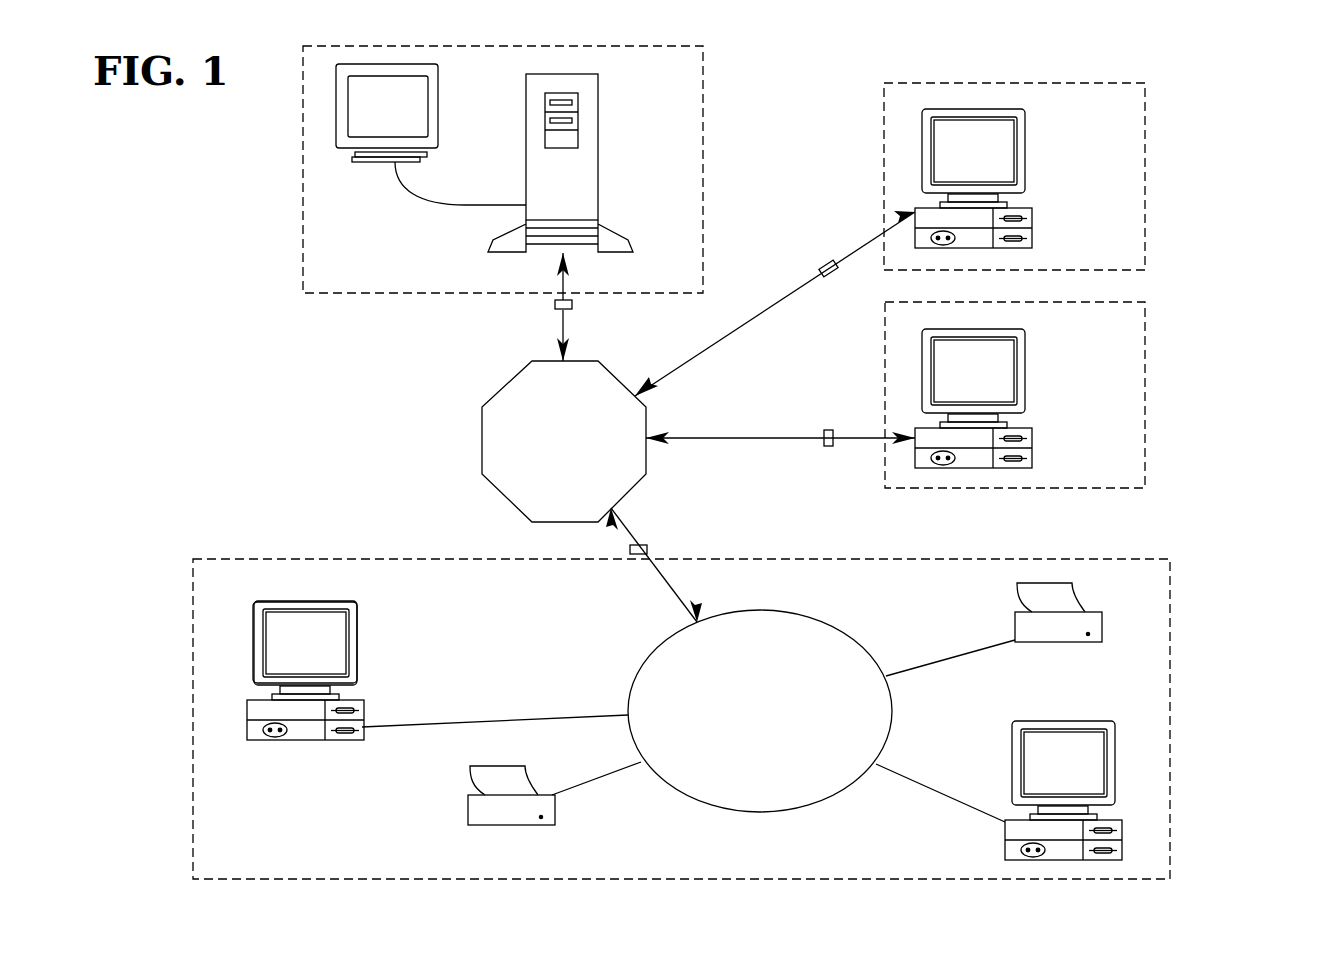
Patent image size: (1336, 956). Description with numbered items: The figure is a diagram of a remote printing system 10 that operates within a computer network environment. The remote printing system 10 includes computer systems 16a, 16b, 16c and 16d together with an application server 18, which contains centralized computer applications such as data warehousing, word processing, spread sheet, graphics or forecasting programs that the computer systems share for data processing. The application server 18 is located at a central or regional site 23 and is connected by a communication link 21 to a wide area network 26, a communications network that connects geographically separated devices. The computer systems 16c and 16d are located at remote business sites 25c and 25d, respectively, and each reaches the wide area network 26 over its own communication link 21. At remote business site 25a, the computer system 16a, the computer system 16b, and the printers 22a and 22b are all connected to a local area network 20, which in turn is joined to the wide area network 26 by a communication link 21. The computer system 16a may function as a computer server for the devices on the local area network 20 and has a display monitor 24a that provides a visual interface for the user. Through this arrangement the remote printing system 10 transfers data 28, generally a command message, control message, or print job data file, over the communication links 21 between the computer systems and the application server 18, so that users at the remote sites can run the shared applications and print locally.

The remote printing system 10 is at (1218, 68).
The computer system 16a is at (295, 743).
The computer system 16b is at (1002, 845).
The computer system 16c is at (1032, 430).
The computer system 16d is at (1031, 206).
The application server 18 is at (599, 143).
The local area network (LAN) 20 is at (660, 640).
The communication link 21 is at (565, 322).
The printer 22a is at (491, 826).
The printer 22b is at (1060, 643).
The central or regional site 23 is at (704, 88).
The display monitor 24a is at (337, 600).
The remote business site 25a is at (1170, 714).
The remote business site 25c is at (1145, 352).
The remote business site 25d is at (1145, 222).
The wide area network (WAN) 26 is at (509, 381).
The data 28 is at (828, 447).